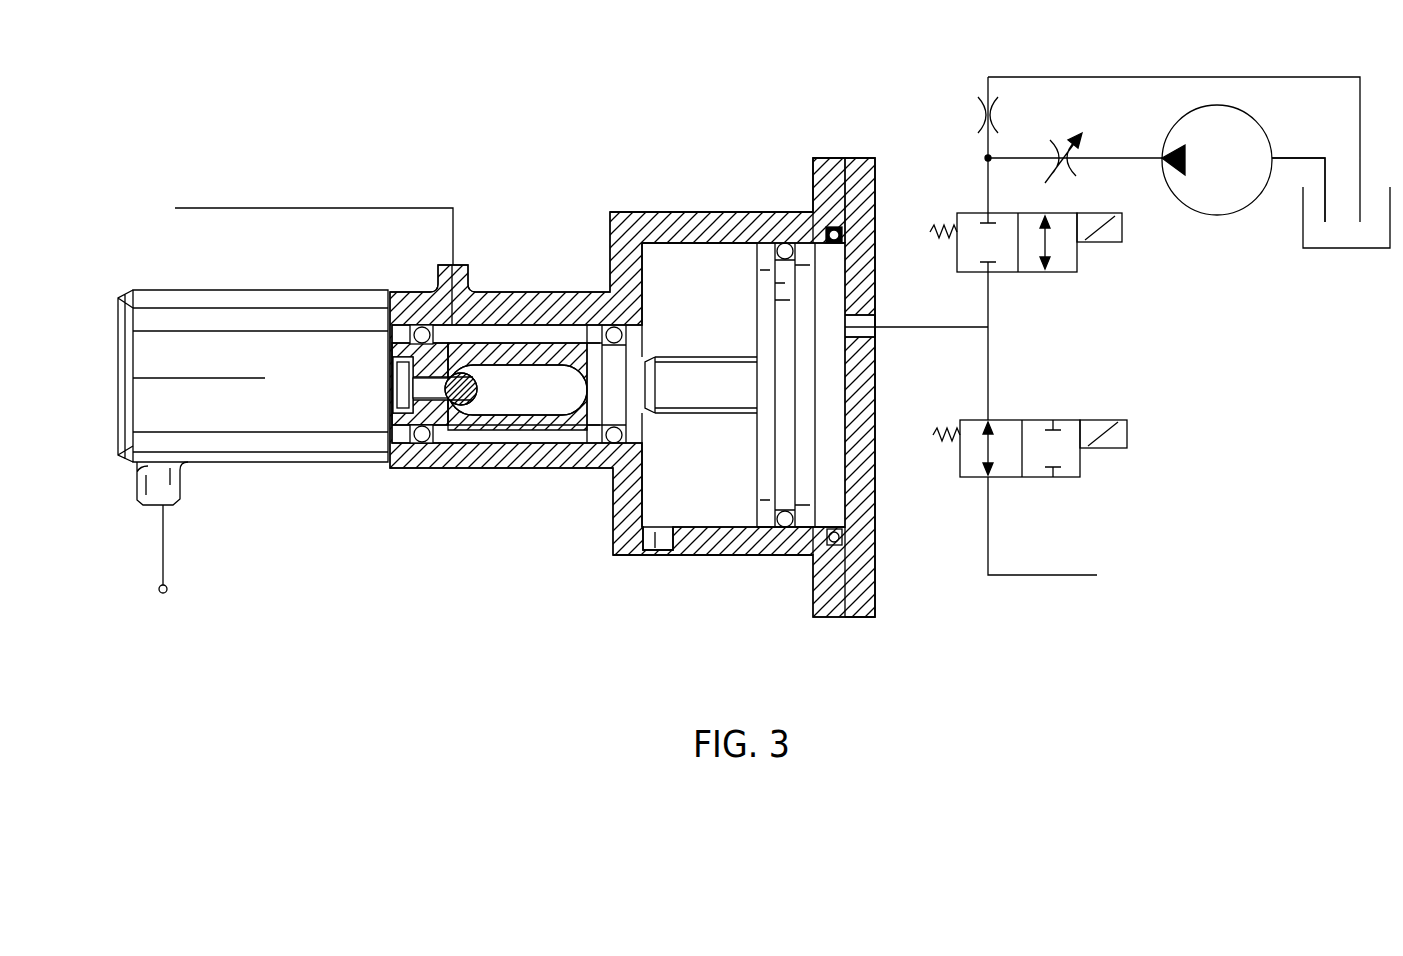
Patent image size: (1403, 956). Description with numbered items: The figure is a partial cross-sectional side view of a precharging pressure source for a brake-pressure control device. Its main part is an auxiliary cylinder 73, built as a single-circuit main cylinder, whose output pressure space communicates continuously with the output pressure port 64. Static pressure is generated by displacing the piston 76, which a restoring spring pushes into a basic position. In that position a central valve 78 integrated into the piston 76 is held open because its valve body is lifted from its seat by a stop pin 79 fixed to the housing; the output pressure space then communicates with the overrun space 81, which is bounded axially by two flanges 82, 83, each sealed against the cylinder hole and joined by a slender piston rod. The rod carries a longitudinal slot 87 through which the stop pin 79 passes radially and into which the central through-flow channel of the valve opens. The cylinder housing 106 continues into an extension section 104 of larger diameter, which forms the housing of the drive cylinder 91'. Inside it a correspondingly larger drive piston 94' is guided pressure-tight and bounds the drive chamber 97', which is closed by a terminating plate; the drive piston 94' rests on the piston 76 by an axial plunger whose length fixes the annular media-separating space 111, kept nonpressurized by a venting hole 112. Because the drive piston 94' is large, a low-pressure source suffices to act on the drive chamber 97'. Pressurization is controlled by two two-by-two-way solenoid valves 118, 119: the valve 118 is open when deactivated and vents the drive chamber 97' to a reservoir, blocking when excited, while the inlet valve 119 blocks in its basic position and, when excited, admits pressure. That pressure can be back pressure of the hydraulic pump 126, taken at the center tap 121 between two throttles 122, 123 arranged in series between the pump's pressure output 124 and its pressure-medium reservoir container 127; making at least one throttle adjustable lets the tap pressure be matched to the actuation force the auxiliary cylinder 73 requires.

The output pressure port 64 is at (167, 589).
The auxiliary cylinder 73 is at (110, 388).
The piston 76 is at (493, 436).
The central valve 78 is at (382, 384).
The stop pin 79 is at (465, 405).
The overrun space 81 is at (500, 330).
The flange 82 is at (438, 322).
The flange 83 is at (592, 325).
The longitudinal slot 87 is at (570, 400).
The drive cylinder 91' is at (713, 604).
The drive piston 94' is at (771, 386).
The drive chamber 97' is at (885, 387).
The extension section 104 is at (712, 215).
The cylinder housing 106 is at (534, 294).
The media-separating space 111 is at (665, 262).
The venting hole 112 is at (656, 540).
The solenoid valve 118 is at (1076, 470).
The solenoid valve 119 is at (1072, 268).
The center tap 121 is at (986, 158).
The throttle 122 is at (1070, 170).
The throttle 123 is at (978, 115).
The pressure output 124 is at (1163, 152).
The hydraulic pump 126 is at (1225, 203).
The pressure-medium reservoir container 127 is at (1340, 240).